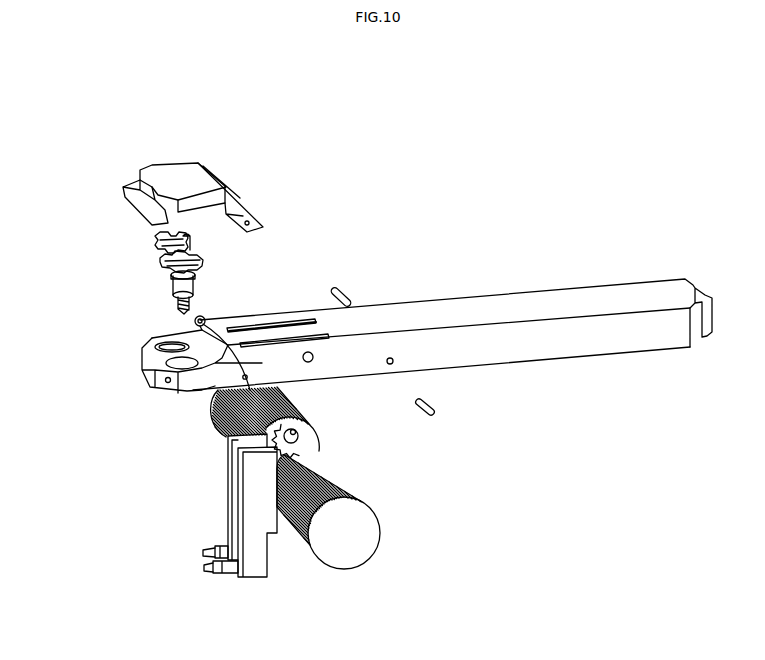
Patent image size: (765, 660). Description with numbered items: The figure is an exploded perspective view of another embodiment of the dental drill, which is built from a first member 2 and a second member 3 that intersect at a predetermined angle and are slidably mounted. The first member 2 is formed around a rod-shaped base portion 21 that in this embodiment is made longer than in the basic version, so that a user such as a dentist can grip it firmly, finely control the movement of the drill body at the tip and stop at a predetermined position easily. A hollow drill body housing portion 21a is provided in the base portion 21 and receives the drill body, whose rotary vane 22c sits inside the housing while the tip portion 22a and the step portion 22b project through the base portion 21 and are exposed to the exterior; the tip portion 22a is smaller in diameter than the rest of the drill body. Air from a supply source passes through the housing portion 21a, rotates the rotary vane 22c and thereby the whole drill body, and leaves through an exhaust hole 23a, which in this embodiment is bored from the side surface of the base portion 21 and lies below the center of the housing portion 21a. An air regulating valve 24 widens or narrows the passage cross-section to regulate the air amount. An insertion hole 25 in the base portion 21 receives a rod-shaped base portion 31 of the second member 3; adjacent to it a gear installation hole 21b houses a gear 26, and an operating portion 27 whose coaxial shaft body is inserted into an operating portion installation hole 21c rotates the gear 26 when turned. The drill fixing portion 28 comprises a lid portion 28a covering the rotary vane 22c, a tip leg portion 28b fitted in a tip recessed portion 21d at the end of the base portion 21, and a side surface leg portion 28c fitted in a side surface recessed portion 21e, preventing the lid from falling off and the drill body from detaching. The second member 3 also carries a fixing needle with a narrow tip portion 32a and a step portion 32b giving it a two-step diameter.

The first member 2 is at (588, 212).
The second member 3 is at (312, 622).
The base portion 21 is at (538, 300).
The drill body housing portion 21a is at (150, 339).
The gear installation hole 21b is at (318, 335).
The operating portion installation hole 21c is at (313, 359).
The tip recessed portion 21d is at (142, 364).
The side surface recessed portion 21e is at (249, 379).
The tip portion 22a is at (180, 315).
The step portion 22b is at (173, 294).
The rotary vane 22c is at (201, 260).
The exhaust hole 23a is at (168, 383).
The air regulating valve 24 is at (343, 284).
The insertion hole 25 is at (272, 340).
The gear 26 is at (303, 446).
The operating portion 27 is at (372, 527).
The drill fixing portion 28 is at (231, 173).
The lid portion 28a is at (193, 181).
The tip leg portion 28b is at (148, 213).
The side surface leg portion 28c is at (240, 207).
The base portion 31 is at (228, 500).
The tip portion 32a is at (212, 568).
The step portion 32b is at (202, 551).